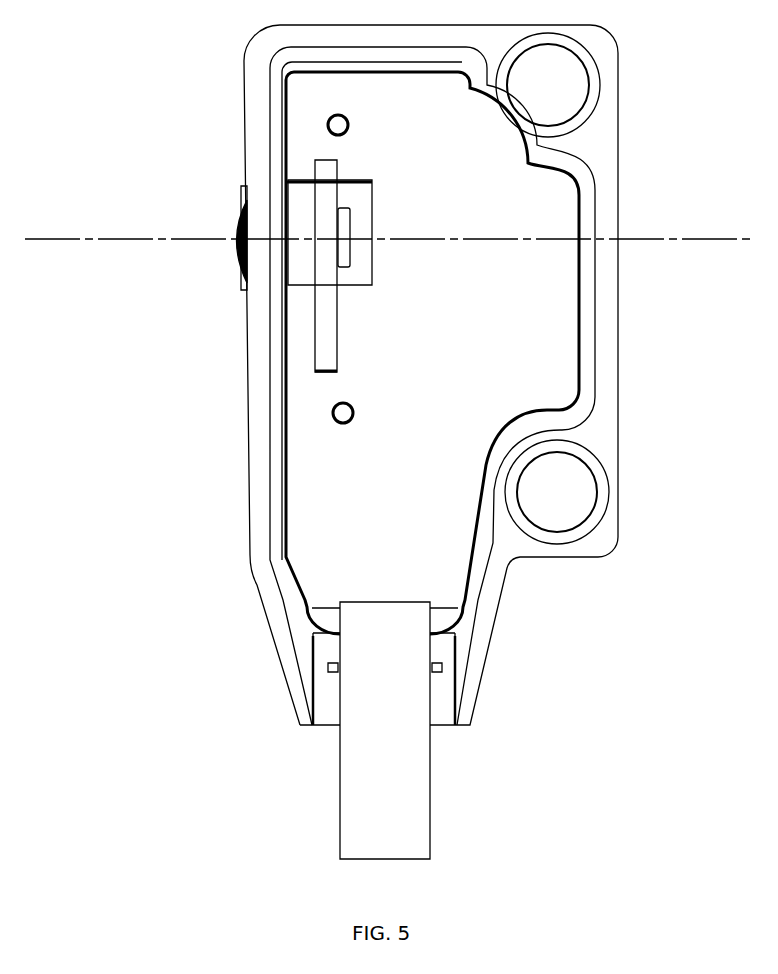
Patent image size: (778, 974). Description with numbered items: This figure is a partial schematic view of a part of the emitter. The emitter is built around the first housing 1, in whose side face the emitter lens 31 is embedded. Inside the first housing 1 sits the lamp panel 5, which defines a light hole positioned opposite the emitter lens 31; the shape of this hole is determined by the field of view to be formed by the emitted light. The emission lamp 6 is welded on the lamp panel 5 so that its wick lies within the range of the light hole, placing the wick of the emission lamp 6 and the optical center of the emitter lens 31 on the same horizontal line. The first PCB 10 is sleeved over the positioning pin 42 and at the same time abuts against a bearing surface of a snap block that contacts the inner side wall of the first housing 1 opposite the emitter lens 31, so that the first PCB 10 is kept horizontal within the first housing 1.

The first housing 1 is at (507, 550).
The first PCB 10 is at (353, 513).
The lamp panel 5 is at (328, 330).
The emission lamp 6 is at (343, 220).
The emitter lens 31 is at (230, 240).
The positioning pin 42 is at (323, 423).